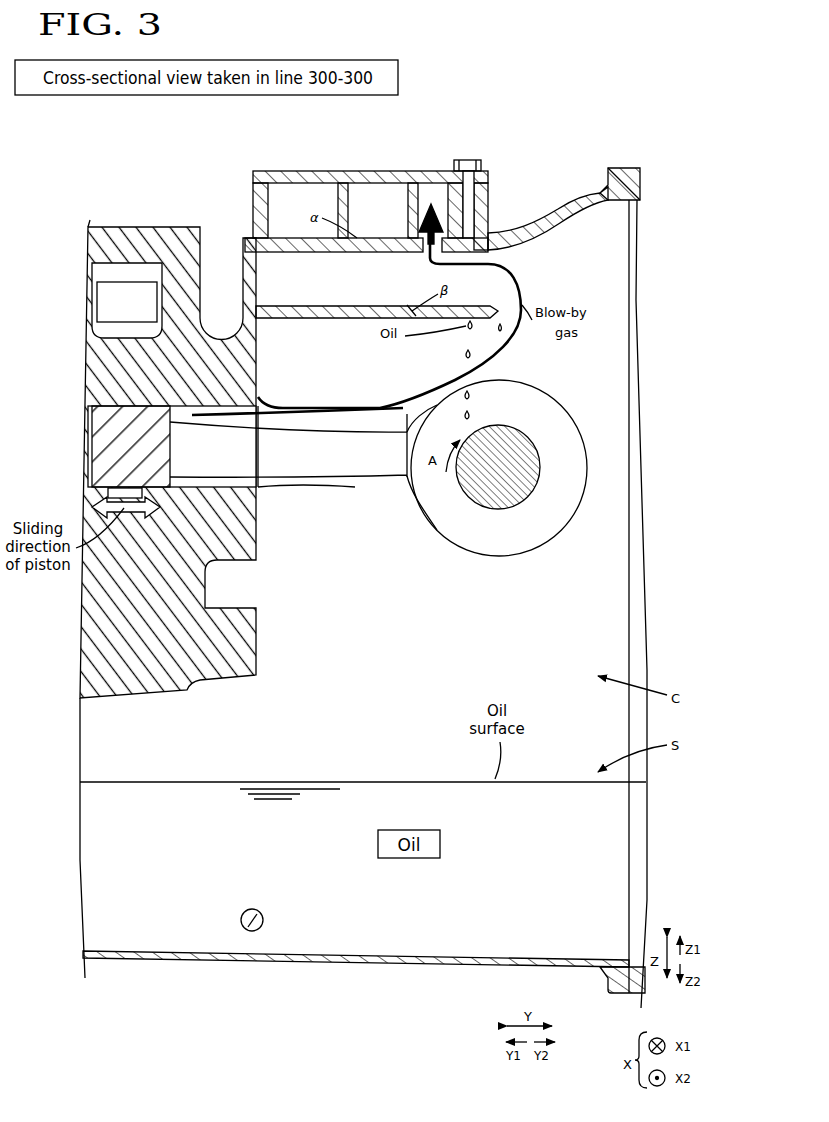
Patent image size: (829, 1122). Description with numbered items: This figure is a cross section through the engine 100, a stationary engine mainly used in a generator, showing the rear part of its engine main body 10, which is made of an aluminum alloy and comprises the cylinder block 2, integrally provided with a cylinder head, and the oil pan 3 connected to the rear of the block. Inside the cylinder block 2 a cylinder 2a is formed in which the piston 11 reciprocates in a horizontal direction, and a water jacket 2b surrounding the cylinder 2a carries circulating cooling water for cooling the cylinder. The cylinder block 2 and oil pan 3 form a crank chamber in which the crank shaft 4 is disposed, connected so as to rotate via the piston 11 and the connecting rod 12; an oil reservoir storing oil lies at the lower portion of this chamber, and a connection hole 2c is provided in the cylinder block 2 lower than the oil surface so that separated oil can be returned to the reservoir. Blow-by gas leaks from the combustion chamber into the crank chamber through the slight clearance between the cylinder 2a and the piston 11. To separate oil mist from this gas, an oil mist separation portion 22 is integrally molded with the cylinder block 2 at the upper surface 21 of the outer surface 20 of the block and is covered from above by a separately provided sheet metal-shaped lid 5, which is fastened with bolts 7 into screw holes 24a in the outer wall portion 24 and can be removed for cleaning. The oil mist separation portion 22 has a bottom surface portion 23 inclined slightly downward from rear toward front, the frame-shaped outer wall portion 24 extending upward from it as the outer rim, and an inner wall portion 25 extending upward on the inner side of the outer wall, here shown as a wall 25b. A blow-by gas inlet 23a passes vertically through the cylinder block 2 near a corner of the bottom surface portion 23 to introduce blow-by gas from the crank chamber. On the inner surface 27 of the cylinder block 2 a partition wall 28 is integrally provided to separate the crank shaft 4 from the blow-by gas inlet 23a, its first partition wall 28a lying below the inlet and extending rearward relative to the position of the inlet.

The engine 100 is at (634, 118).
The cylinder block 2 is at (341, 576).
The cylinder 2a is at (91, 407).
The water jacket 2b is at (121, 275).
The connection hole 2c is at (252, 931).
The oil pan 3 is at (638, 170).
The engine main body 10 is at (629, 172).
The crank shaft 4 is at (535, 461).
The lid 5 is at (367, 212).
The bolt 7 is at (484, 165).
The piston 11 is at (96, 452).
The connecting rod 12 is at (352, 488).
The outer surface 20 is at (545, 218).
The upper surface 21 is at (548, 207).
The oil mist separation portion 22 is at (345, 245).
The bottom surface portion 23 is at (287, 237).
The blow-by gas inlet 23a is at (428, 250).
The outer wall portion 24 is at (262, 175).
The screw hole 24a is at (471, 217).
The inner wall portion 25 is at (387, 182).
The partition wall 25b is at (340, 172).
The inner surface 27 is at (256, 275).
The partition wall 28 is at (377, 335).
The first partition wall 28a is at (300, 320).